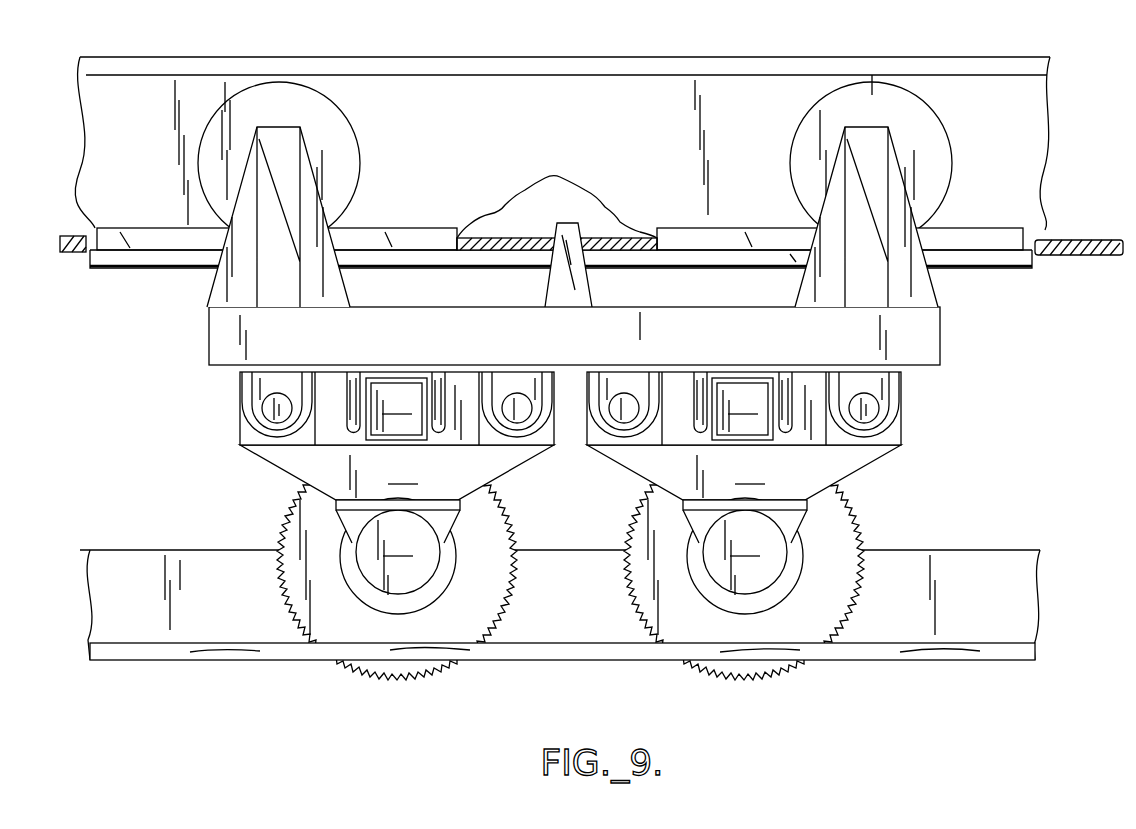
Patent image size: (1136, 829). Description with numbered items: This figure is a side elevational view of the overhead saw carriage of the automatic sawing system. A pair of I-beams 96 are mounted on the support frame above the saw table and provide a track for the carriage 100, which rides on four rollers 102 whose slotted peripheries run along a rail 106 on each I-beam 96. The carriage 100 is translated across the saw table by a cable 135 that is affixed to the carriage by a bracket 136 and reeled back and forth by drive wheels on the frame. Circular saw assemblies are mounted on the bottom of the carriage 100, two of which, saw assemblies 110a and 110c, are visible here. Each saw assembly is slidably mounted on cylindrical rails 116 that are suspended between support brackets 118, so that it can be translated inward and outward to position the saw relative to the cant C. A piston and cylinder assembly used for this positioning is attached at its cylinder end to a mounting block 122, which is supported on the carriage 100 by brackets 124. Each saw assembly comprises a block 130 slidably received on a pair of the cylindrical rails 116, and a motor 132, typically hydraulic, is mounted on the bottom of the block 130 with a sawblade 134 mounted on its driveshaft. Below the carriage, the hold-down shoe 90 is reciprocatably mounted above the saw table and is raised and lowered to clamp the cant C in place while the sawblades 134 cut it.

The hold-down shoe 90 is at (1005, 547).
The I-beams 96 is at (695, 58).
The carriage 100 is at (945, 333).
The rollers 102 is at (297, 102).
The rail 106 is at (384, 229).
The circular saw assembly 110a is at (909, 473).
The circular saw assembly 110c is at (243, 481).
The cylindrical rails 116 is at (262, 403).
The support brackets 118 is at (258, 380).
The mounting block 122 is at (569, 409).
The brackets 124 is at (438, 372).
The block 130 is at (570, 472).
The motor 132 is at (571, 556).
The sawblade 134 is at (428, 632).
The cable 135 is at (1085, 241).
The bracket 136 is at (590, 290).
The cant C is at (945, 656).